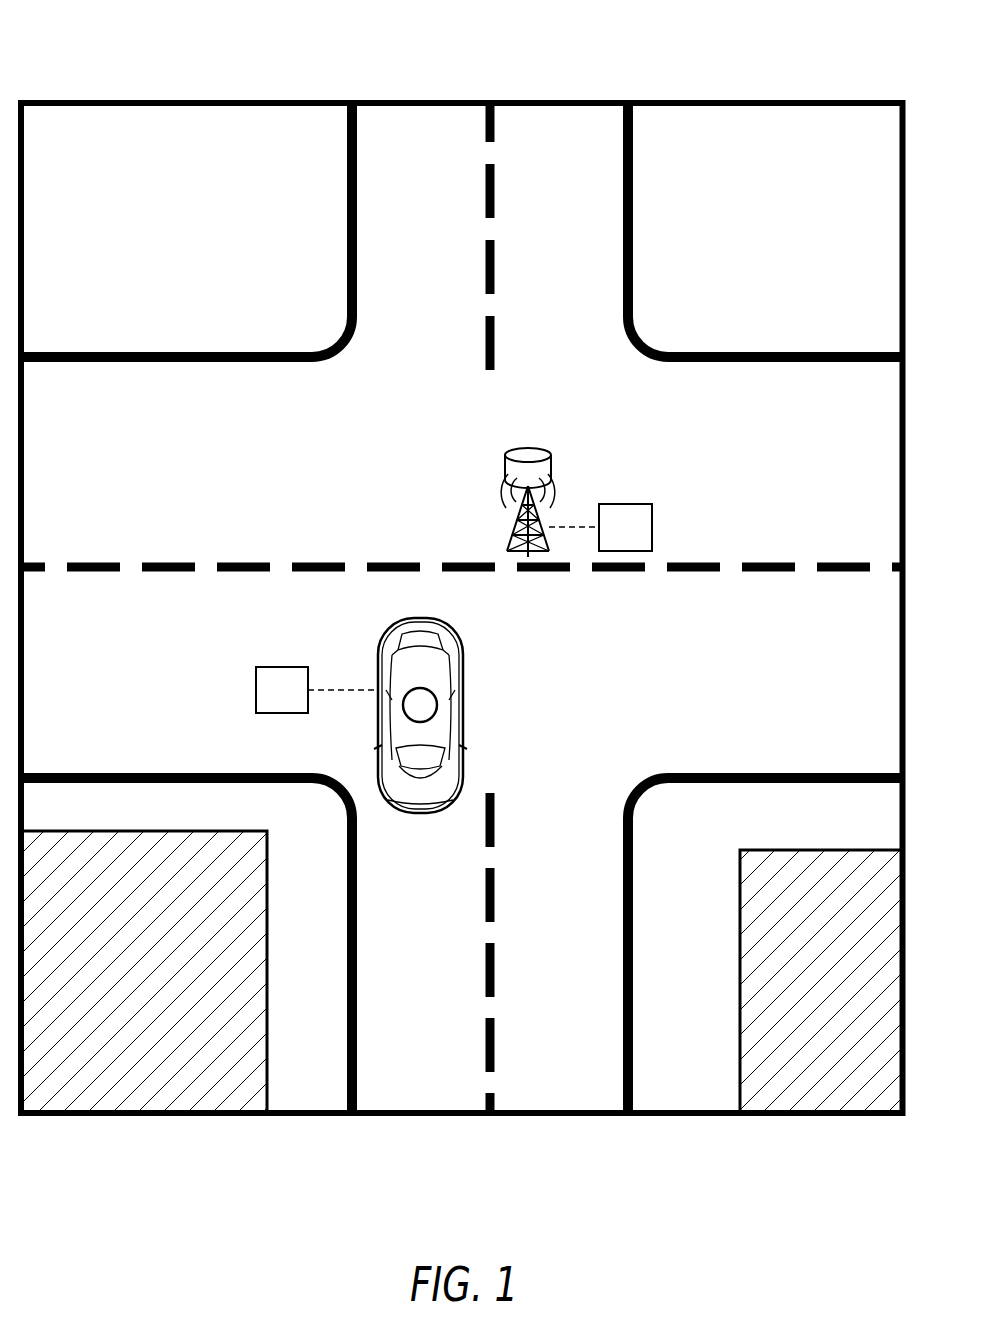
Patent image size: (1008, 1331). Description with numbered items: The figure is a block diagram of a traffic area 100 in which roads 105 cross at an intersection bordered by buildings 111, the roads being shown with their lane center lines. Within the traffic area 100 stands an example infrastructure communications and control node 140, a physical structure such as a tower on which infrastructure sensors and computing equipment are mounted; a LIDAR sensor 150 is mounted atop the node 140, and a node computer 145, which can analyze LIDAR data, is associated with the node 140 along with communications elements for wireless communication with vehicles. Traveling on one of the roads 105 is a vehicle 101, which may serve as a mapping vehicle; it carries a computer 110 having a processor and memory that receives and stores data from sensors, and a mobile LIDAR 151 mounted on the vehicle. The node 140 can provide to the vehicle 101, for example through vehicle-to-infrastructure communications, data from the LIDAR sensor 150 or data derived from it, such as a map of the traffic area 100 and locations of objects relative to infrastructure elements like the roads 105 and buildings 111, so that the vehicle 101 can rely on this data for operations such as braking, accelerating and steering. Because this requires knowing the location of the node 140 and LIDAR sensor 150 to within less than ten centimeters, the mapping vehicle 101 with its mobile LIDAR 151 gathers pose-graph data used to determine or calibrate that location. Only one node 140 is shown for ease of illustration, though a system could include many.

The traffic area 100 is at (172, 56).
The vehicle 101 is at (463, 660).
The road 105 is at (397, 135).
The computer 110 is at (298, 706).
The building 111 is at (158, 983).
The infrastructure communications and control node 140 is at (512, 530).
The node computer 145 is at (641, 543).
The LIDAR sensor 150 is at (552, 463).
The mobile LIDAR 151 is at (437, 703).